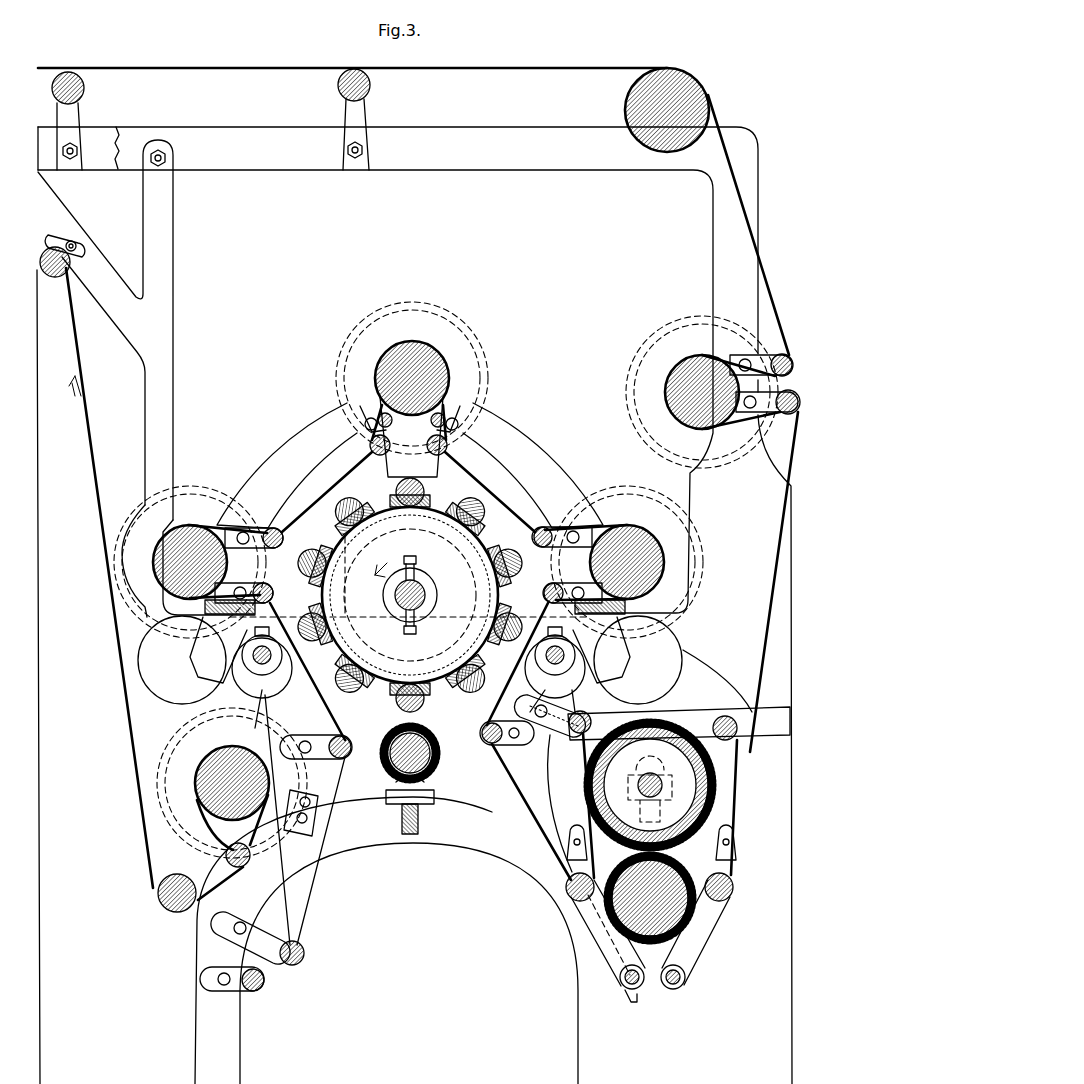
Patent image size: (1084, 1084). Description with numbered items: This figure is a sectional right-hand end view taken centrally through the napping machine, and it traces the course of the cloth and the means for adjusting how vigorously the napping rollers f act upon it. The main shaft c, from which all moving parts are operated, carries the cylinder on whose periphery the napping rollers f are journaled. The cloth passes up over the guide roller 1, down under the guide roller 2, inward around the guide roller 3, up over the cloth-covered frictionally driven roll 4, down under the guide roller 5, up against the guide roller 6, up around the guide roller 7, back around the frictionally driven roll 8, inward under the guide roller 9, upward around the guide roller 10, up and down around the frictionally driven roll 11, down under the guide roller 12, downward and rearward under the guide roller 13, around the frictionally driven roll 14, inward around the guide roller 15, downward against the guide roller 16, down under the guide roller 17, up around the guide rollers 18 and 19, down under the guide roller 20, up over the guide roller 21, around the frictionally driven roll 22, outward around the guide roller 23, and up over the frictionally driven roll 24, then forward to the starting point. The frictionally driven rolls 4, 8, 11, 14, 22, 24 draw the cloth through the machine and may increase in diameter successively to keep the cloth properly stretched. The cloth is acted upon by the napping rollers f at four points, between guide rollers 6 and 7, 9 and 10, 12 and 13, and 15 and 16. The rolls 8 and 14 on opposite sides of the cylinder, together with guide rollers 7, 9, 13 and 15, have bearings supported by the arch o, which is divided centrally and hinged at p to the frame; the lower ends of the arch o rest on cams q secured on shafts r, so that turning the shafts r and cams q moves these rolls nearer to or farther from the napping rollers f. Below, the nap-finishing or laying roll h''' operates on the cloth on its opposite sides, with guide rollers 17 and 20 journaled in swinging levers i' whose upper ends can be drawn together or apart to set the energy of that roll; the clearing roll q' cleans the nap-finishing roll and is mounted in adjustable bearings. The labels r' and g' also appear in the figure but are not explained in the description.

The guide roller 1 is at (70, 262).
The guide roller 2 is at (158, 895).
The guide roller 3 is at (227, 852).
The cloth-covered frictionally driven roll 4 is at (205, 768).
The guide roller 5 is at (292, 940).
The guide roller 6 is at (311, 820).
The guide roller 7 is at (246, 585).
The cloth-covered frictionally driven roll 8 is at (190, 562).
The guide roller 9 is at (278, 532).
The guide roller 10 is at (410, 437).
The cloth-covered frictionally driven roll 11 is at (412, 378).
The guide roller 12 is at (450, 441).
The guide roller 13 is at (545, 525).
The cloth-covered frictionally driven roll 14 is at (627, 562).
The guide roller 15 is at (552, 585).
The guide roller 16 is at (485, 732).
The guide roller 17 is at (566, 887).
The guide roller 18 is at (567, 732).
The guide roller 19 is at (725, 716).
The guide roller 20 is at (735, 888).
The guide roller 21 is at (802, 398).
The cloth-covered frictionally driven roll 22 is at (668, 384).
The guide roller 23 is at (795, 360).
The frictionally driven roll 24 is at (710, 95).
The main shaft c is at (395, 592).
The napping rollers f is at (450, 512).
The hinge point of the arch p is at (372, 410).
The arch o is at (410, 465).
The cams q is at (303, 758).
The clearing roll q' is at (549, 778).
The shafts r is at (262, 662).
The pivot r' is at (555, 661).
The swinging arms or levers i' is at (653, 941).
The nap finishing or laying roll h''' is at (650, 785).
The brush g' is at (650, 912).